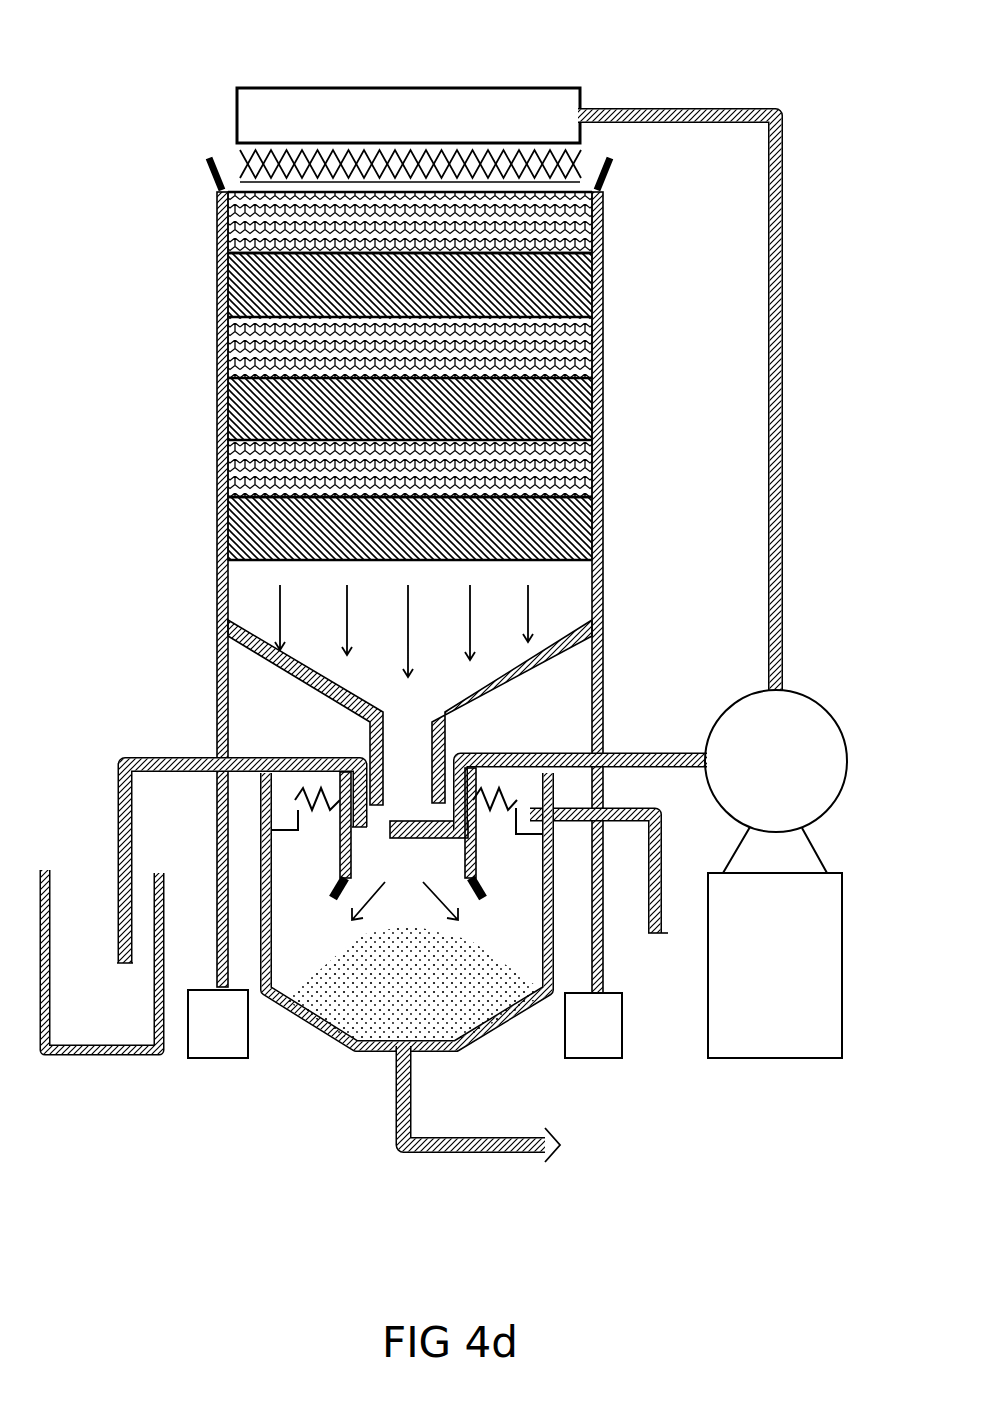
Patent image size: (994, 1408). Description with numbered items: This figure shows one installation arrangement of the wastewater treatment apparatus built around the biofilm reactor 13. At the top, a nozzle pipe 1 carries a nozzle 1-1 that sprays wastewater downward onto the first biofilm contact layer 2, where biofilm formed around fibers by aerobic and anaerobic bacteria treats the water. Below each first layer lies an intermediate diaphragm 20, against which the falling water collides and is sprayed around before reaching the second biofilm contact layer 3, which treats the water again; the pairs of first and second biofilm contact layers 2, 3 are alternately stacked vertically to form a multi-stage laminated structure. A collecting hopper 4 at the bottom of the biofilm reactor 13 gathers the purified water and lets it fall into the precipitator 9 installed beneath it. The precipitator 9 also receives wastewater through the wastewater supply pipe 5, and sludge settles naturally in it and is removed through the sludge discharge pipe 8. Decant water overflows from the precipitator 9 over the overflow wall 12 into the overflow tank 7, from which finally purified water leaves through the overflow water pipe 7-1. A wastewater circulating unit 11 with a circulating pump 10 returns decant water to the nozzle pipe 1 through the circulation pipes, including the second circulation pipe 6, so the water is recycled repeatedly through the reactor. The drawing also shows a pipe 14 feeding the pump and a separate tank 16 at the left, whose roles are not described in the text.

The nozzle pipe 1 is at (413, 87).
The nozzle 1-1 is at (240, 158).
The first biofilm contact layer 2 is at (220, 465).
The second biofilm contact layer 3 is at (607, 520).
The intermediate diaphragm 20 is at (603, 264).
The collecting hopper 4 is at (284, 666).
The wastewater supply pipe 5 is at (125, 745).
The second circulation pipe 6 is at (785, 598).
The overflow tank 7 is at (282, 808).
The overflow water pipe 7-1 is at (658, 935).
The sludge discharge pipe 8 is at (445, 1160).
The precipitator 9 is at (323, 1015).
The circulating pump 10 is at (823, 708).
The wastewater circulating unit 11 is at (843, 411).
The overflow wall 12 is at (567, 752).
The biofilm reactor 13 is at (217, 590).
The supply pipe 14 is at (648, 752).
The collection tank 16 is at (88, 1025).